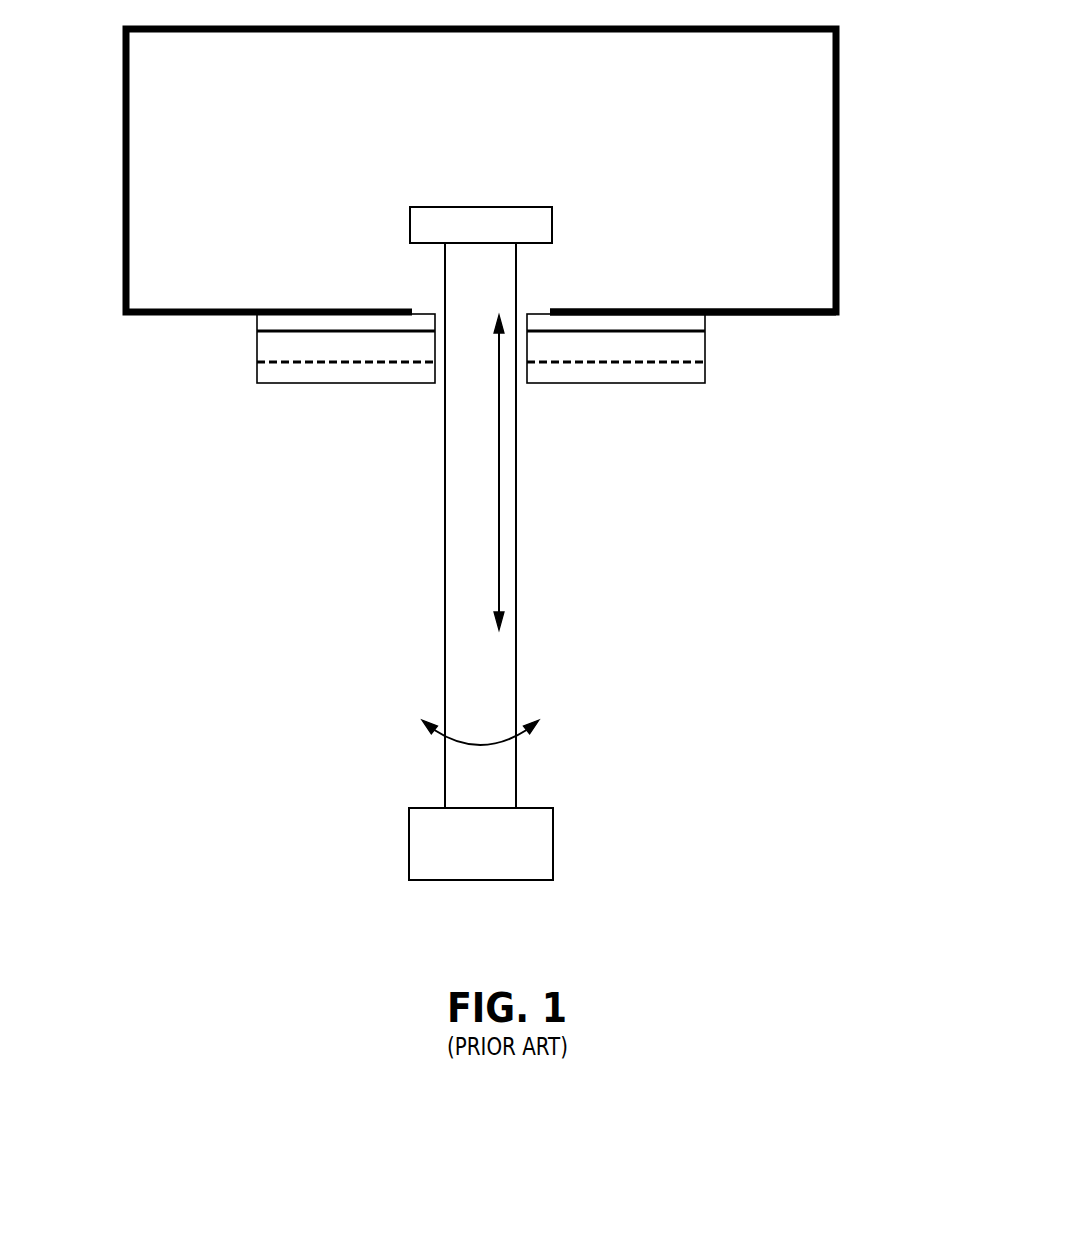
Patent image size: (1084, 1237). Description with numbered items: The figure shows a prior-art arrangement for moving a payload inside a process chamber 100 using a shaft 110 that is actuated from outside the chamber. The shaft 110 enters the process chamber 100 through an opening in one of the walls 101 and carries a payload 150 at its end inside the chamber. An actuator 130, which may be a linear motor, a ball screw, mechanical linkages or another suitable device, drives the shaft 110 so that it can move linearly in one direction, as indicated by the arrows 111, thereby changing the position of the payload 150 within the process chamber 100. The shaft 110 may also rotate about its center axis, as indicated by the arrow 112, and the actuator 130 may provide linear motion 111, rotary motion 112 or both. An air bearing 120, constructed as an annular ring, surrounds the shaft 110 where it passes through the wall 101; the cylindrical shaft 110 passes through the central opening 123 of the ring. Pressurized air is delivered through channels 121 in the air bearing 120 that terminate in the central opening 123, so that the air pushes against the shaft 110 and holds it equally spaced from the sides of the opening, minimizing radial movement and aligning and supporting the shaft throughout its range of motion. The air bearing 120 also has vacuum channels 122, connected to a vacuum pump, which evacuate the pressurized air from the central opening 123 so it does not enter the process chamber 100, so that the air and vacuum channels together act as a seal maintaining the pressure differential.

The process chamber 100 is at (197, 74).
The wall 101 is at (772, 306).
The shaft 110 is at (445, 770).
The linear motion 111 is at (499, 495).
The rotary motion 112 is at (498, 740).
The air bearing 120 is at (315, 383).
The channels 121 is at (257, 362).
The vacuum channels 122 is at (257, 331).
The central opening 123 is at (440, 400).
The actuator 130 is at (499, 857).
The payload 150 is at (498, 234).